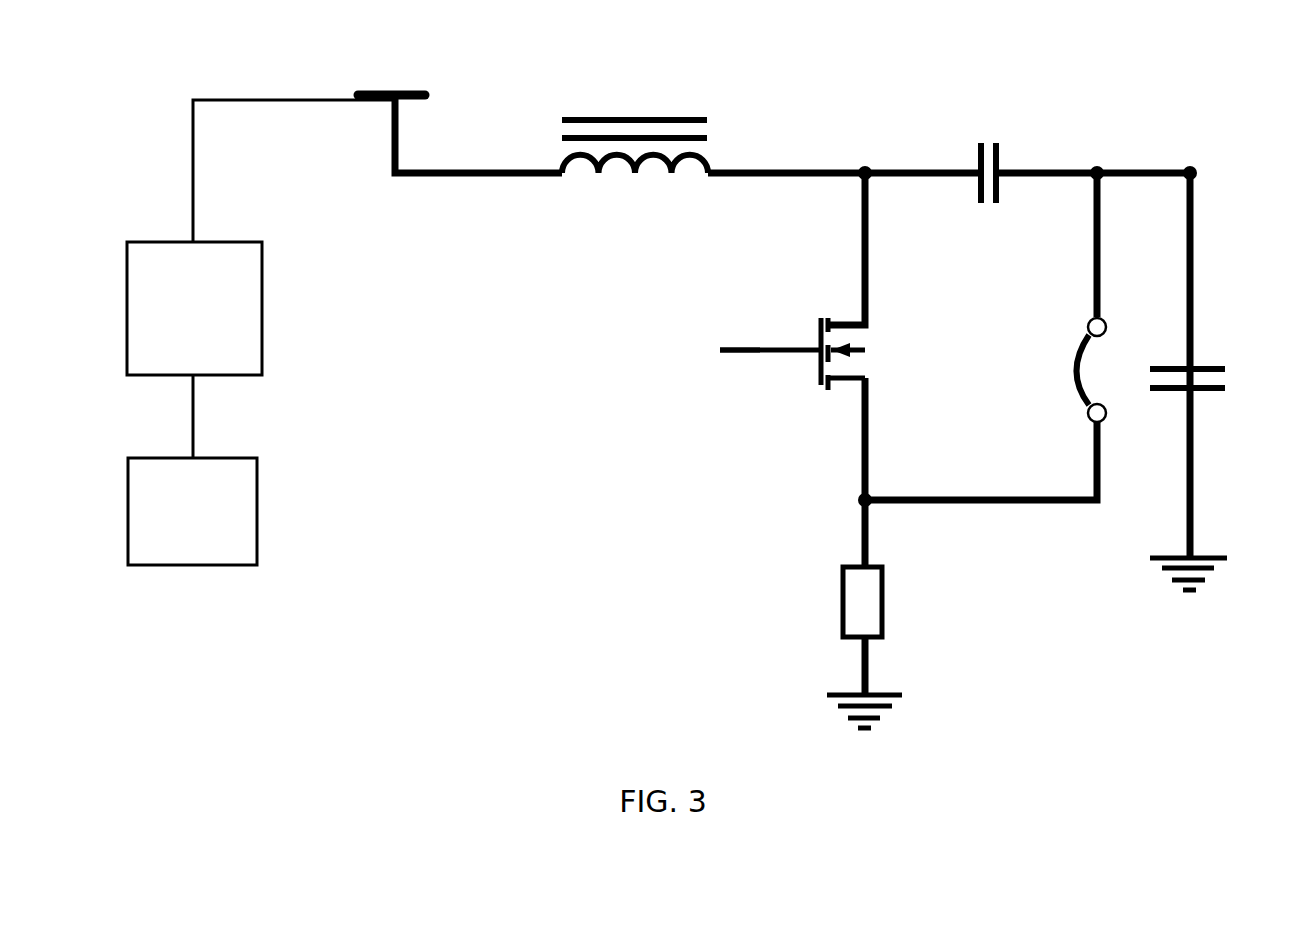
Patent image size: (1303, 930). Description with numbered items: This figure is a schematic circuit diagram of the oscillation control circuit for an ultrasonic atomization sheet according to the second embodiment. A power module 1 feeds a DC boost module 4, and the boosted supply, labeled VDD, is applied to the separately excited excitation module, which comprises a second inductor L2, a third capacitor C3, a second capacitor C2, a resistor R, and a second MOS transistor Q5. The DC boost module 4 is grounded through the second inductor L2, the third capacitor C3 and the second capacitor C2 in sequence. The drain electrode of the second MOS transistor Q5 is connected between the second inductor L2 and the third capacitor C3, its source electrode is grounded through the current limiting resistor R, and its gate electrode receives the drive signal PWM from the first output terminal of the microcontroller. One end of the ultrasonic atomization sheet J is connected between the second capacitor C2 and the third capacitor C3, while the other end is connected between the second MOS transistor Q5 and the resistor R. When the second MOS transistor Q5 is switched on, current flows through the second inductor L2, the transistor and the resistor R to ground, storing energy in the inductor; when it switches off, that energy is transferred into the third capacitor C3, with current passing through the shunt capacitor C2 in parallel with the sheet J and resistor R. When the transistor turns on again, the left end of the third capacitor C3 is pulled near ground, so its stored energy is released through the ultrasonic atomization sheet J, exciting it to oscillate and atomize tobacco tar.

The DC boost module 4 is at (194, 308).
The power module 1 is at (192, 511).
The second inductor L2 is at (635, 110).
The third capacitor C3 is at (987, 144).
The second MOS transistor Q5 is at (831, 359).
The PWM input signal PWM is at (752, 319).
The ultrasonic atomization sheet J is at (1068, 370).
The second capacitor C2 is at (1214, 378).
The resistor R is at (877, 602).
The supply voltage VDD is at (390, 59).